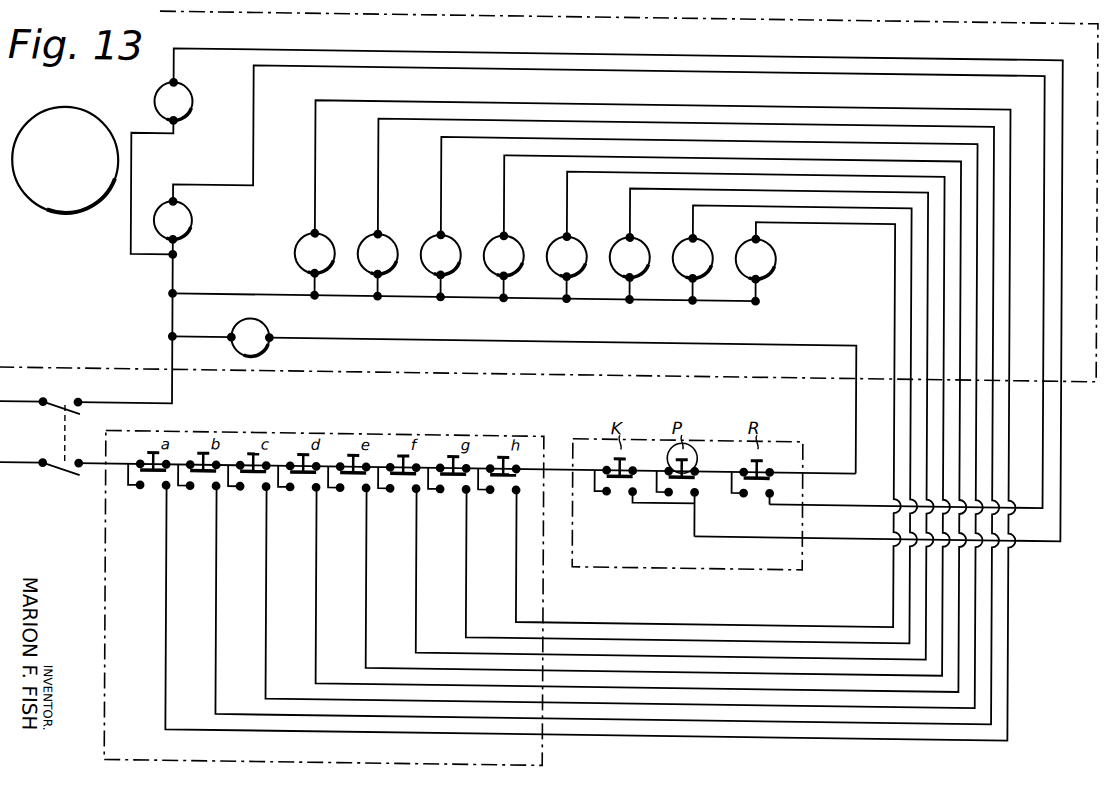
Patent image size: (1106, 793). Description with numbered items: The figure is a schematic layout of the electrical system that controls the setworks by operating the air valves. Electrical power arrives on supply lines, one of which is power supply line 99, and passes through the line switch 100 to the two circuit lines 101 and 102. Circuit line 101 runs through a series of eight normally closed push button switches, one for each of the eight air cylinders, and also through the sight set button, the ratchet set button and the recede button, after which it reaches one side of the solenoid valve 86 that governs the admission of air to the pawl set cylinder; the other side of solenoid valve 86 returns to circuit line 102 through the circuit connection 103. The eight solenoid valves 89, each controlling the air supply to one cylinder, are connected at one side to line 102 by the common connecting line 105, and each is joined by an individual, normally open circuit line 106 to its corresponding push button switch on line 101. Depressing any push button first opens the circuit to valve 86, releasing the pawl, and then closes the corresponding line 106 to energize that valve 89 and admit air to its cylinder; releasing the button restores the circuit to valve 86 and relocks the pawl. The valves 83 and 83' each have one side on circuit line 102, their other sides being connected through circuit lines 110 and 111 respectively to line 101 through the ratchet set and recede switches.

The solenoid valve 83 is at (187, 100).
The solenoid valve 83' is at (191, 221).
The solenoid valve 86 is at (261, 322).
The solenoid valves 89 is at (555, 260).
The electrical power supply line 99 is at (20, 394).
The line switch 100 is at (65, 410).
The circuit line 101 is at (88, 466).
The circuit line 102 is at (174, 392).
The circuit connection 103 is at (203, 333).
The connecting line 105 is at (362, 291).
The circuit lines 106 is at (574, 419).
The circuit line 110 is at (537, 44).
The circuit line 111 is at (526, 62).